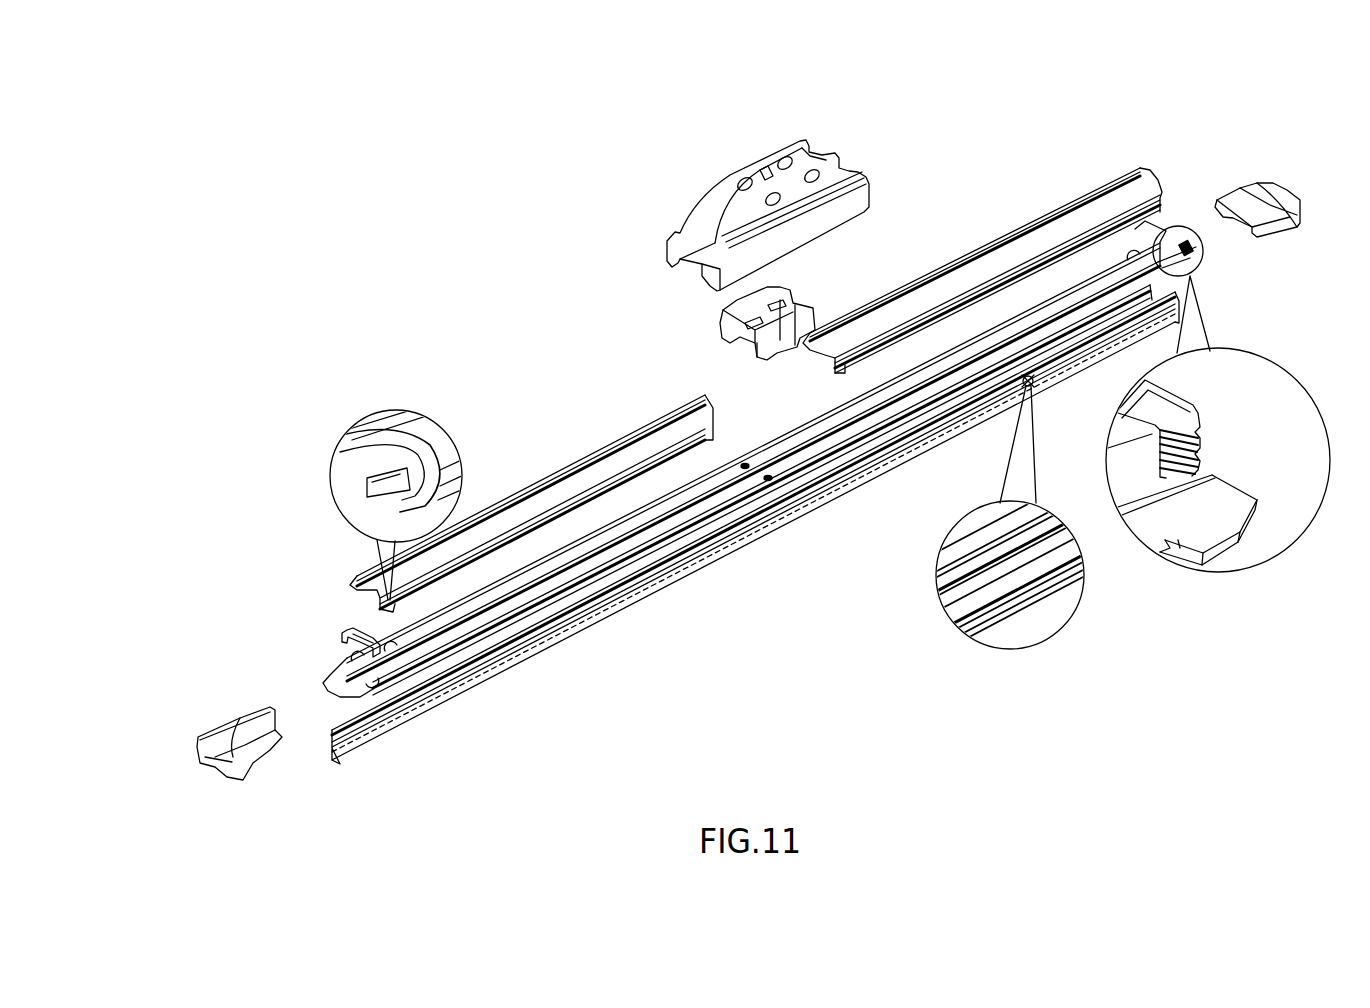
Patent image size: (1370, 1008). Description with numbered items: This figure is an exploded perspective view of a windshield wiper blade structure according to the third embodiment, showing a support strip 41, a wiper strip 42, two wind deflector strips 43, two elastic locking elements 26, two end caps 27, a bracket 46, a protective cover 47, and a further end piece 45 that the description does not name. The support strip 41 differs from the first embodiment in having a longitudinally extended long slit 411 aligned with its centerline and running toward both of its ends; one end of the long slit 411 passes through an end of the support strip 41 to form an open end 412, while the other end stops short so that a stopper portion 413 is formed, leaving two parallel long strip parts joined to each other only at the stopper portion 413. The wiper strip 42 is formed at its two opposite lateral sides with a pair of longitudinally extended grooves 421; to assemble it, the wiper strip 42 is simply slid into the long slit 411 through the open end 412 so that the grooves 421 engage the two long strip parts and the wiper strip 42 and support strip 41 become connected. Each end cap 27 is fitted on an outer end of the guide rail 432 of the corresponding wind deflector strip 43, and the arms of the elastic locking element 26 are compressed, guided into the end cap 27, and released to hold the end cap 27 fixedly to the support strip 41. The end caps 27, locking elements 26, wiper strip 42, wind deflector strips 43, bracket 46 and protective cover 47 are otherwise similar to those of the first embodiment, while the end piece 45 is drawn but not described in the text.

The elastic locking element 26 is at (340, 628).
The end cap 27 is at (1242, 182).
The support strip 41 is at (320, 688).
The long slit 411 is at (782, 455).
The open end 412 is at (1200, 478).
The stopper portion 413 is at (337, 680).
The wiper strip 42 is at (632, 626).
The groove 421 is at (1055, 548).
The wind deflector strip 43 is at (1015, 255).
The guide rail 432 is at (365, 488).
The end cap 45 is at (268, 782).
The bracket 46 is at (790, 302).
The protective cover 47 is at (718, 205).